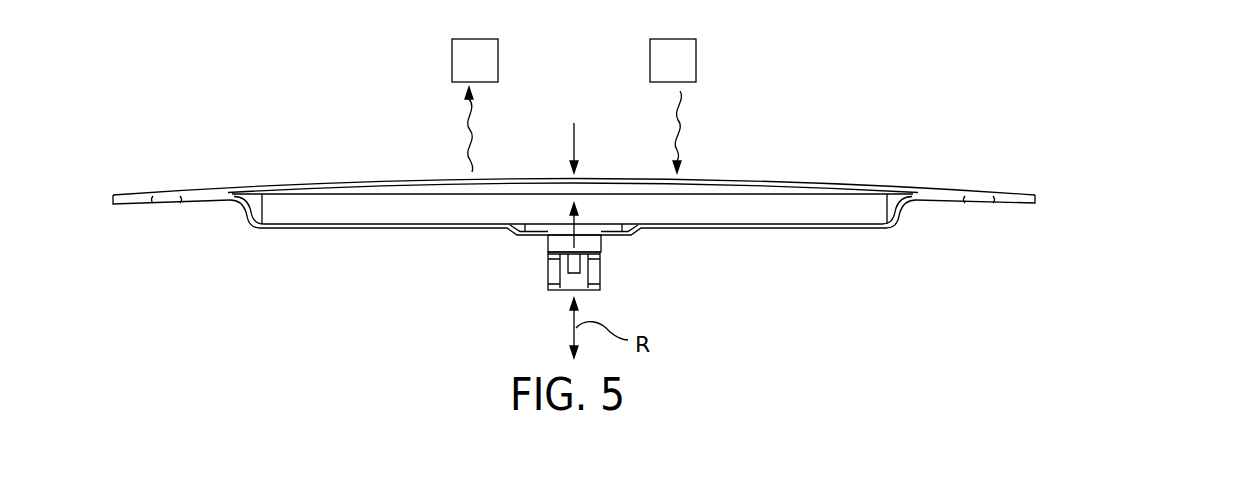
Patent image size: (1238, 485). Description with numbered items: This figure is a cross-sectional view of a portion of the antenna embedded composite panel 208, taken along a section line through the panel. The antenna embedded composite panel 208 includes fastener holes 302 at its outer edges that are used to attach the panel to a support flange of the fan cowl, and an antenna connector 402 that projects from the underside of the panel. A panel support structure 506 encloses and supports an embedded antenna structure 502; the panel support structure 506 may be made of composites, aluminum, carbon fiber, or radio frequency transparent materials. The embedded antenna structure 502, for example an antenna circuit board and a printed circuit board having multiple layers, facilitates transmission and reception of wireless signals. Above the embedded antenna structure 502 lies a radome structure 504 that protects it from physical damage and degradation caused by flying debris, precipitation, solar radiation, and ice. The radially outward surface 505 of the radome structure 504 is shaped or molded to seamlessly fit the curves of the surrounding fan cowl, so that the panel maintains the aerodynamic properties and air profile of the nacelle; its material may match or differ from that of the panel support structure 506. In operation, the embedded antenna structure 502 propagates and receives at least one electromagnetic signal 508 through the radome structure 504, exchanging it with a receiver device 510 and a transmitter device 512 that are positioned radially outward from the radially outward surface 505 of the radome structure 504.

The antenna embedded composite panel 208 is at (1062, 212).
The fastener holes 302 is at (165, 198).
The antenna connector 402 is at (600, 287).
The embedded antenna structure 502 is at (852, 205).
The radome structure 504 is at (323, 194).
The radially outward surface 505 is at (400, 175).
The panel support structure 506 is at (360, 229).
The electromagnetic signal 508 is at (455, 136).
The receiver device 510 is at (452, 58).
The transmitter device 512 is at (696, 58).